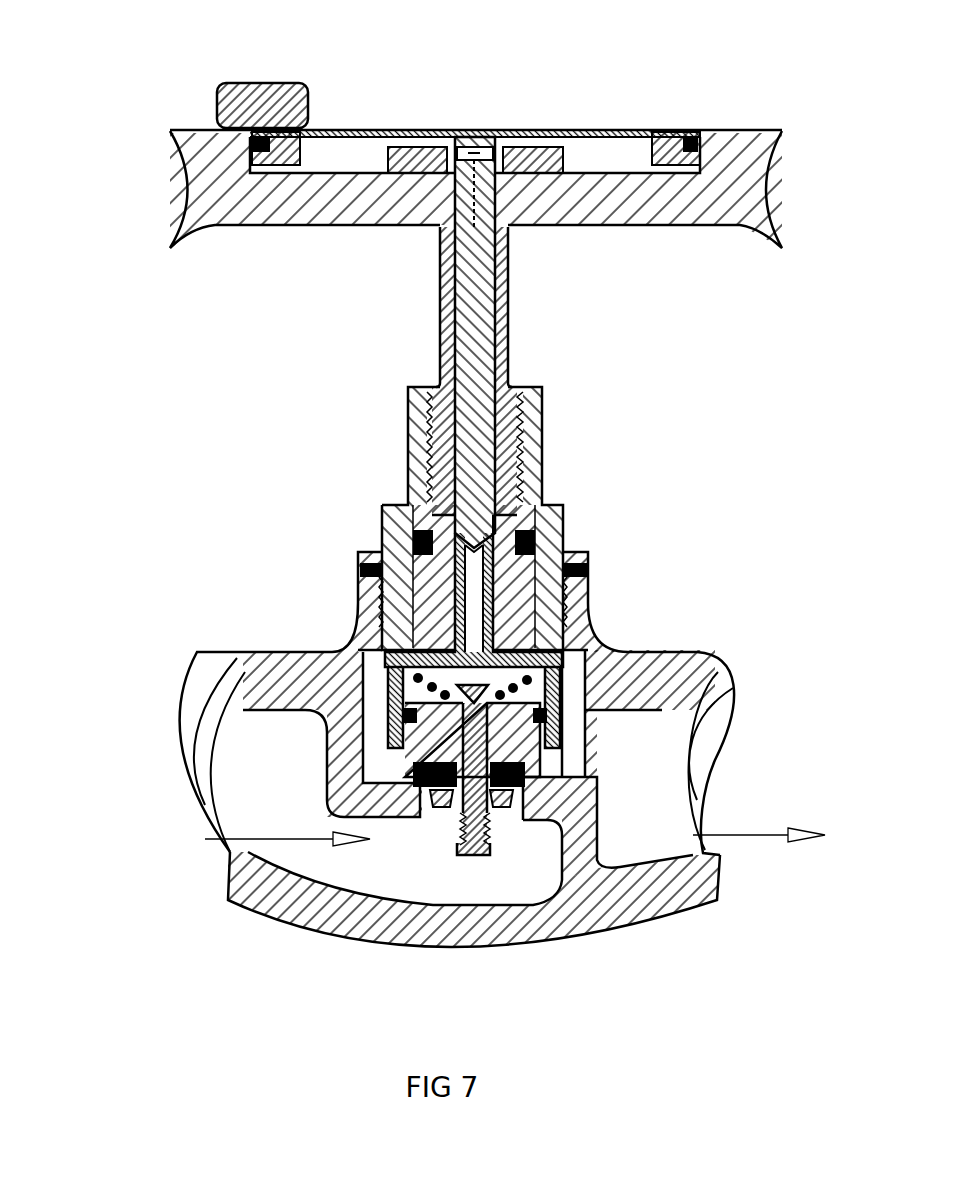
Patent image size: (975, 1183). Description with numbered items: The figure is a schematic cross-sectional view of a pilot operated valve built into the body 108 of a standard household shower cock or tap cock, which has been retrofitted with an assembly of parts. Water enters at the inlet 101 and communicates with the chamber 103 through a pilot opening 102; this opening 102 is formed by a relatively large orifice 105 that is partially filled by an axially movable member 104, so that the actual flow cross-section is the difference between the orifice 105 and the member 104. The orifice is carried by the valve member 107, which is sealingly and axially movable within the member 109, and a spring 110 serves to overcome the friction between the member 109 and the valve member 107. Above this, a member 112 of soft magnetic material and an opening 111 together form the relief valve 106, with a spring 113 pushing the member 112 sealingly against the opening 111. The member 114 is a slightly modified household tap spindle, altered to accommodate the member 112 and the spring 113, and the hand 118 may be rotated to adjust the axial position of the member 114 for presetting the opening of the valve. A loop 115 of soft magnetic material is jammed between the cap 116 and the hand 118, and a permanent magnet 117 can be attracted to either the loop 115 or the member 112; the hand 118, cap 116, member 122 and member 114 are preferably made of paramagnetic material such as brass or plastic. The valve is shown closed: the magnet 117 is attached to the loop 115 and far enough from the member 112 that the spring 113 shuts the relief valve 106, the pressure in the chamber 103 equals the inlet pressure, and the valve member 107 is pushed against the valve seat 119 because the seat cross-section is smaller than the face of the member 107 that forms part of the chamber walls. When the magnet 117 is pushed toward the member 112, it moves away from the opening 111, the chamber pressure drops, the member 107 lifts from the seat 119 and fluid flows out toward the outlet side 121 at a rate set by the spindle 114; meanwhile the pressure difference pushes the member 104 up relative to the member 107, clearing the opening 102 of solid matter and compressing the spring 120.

The inlet 101 is at (262, 838).
The opening 102 is at (562, 743).
The chamber 103 is at (362, 665).
The axially movable member 104 is at (542, 772).
The orifice 105 is at (540, 717).
The relief valve 106 is at (455, 532).
The valve member 107 is at (427, 737).
The body 108 is at (367, 914).
The member 109 is at (667, 652).
The spring 110 is at (563, 653).
The opening 111 is at (573, 545).
The member 112 is at (473, 292).
The spring 113 is at (473, 133).
The member 114 is at (440, 324).
The loop 115 is at (703, 132).
The cap 116 is at (647, 131).
The permanent magnet 117 is at (260, 82).
The hand 118 is at (200, 153).
The valve seat 119 is at (423, 777).
The spring 120 is at (490, 837).
The outlet flow direction 121 is at (787, 835).
The member 122 is at (532, 147).